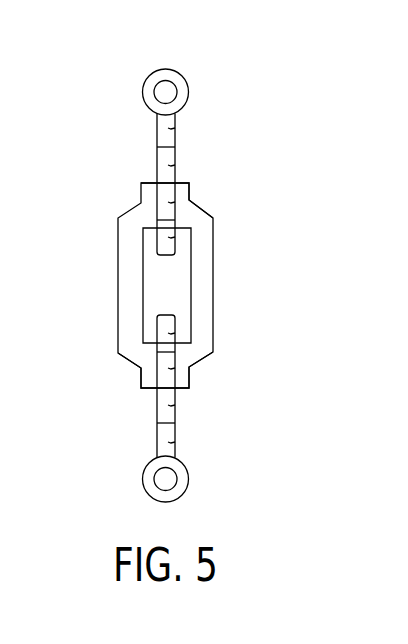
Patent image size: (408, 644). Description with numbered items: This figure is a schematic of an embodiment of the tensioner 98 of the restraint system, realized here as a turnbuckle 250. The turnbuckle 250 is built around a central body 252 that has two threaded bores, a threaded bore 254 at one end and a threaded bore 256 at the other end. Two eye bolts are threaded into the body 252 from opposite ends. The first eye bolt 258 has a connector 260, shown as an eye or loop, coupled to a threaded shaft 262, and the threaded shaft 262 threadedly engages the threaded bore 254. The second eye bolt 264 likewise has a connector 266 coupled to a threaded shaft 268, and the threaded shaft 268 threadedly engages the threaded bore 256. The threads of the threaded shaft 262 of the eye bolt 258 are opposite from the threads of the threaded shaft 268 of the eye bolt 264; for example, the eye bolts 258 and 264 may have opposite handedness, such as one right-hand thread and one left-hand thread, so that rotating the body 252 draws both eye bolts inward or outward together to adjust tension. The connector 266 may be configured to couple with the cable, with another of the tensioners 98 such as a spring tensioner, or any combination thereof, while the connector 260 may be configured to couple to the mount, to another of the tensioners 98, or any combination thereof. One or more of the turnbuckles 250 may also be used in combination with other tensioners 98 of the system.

The tensioner 98 is at (226, 71).
The turnbuckle 250 is at (201, 98).
The connector 260 is at (153, 85).
The eye bolt 258 is at (138, 140).
The threaded shaft 262 is at (172, 141).
The body 252 is at (213, 285).
The threaded bore 254 is at (175, 213).
The threaded bore 256 is at (175, 353).
The threaded shaft 268 is at (168, 417).
The eye bolt 264 is at (111, 441).
The connector 266 is at (180, 488).